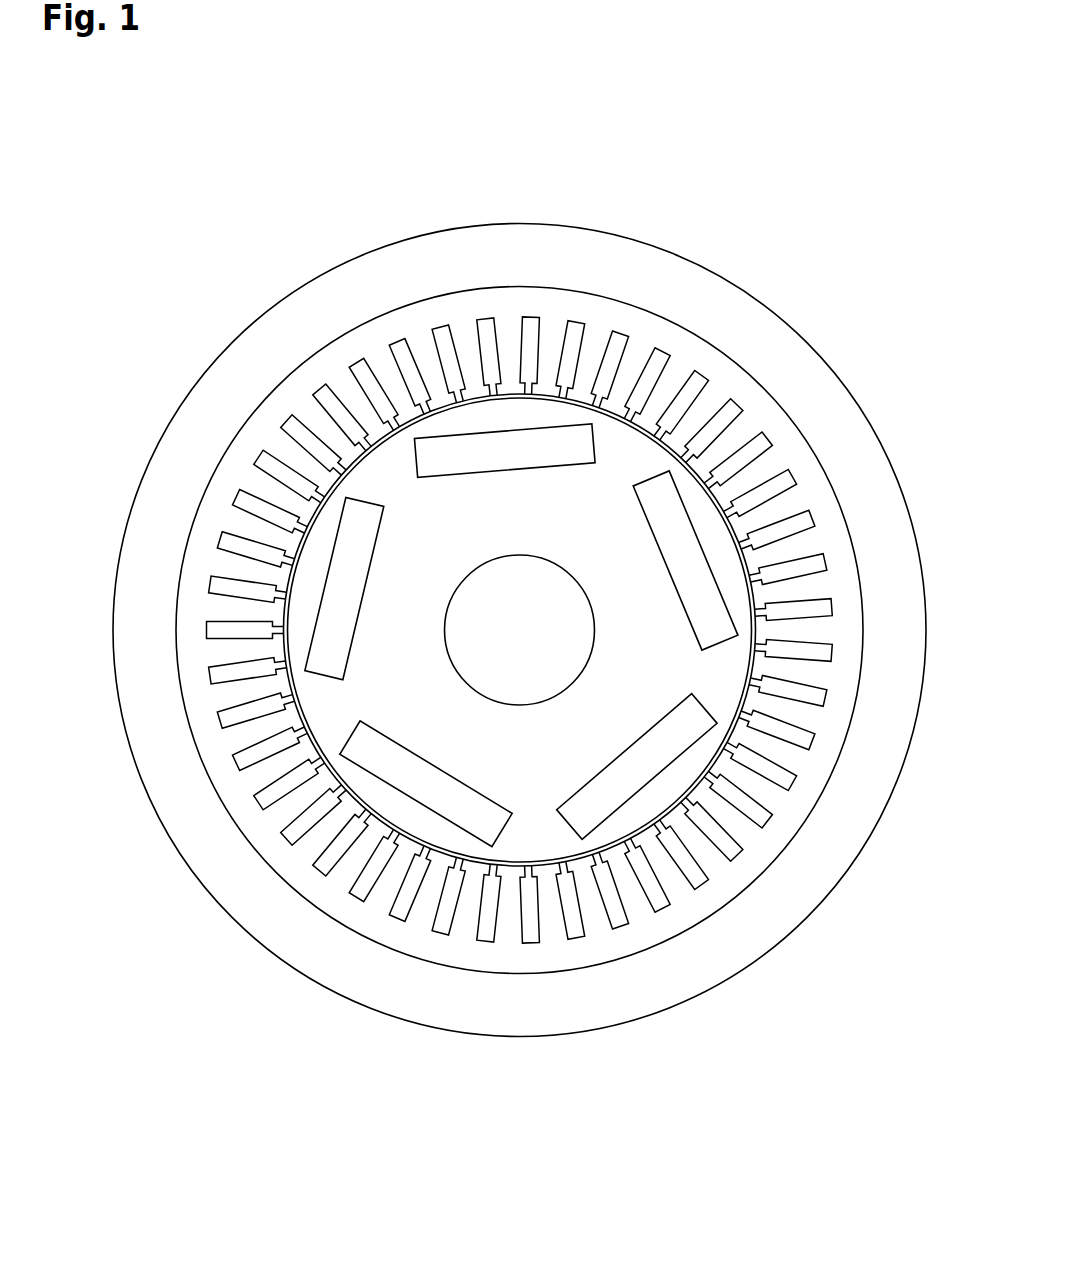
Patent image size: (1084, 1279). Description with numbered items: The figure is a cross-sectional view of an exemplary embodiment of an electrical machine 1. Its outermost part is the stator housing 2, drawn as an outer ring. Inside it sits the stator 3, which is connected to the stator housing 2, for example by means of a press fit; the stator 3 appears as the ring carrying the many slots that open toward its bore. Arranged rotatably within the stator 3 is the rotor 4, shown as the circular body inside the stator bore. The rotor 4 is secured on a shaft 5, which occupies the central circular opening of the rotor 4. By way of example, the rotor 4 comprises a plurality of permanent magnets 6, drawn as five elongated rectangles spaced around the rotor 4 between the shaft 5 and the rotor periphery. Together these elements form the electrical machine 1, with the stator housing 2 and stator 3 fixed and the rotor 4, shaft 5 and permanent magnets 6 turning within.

The electrical machine 1 is at (232, 278).
The stator housing 2 is at (820, 382).
The stator 3 is at (812, 492).
The rotor 4 is at (545, 841).
The shaft 5 is at (542, 595).
The permanent magnets 6 is at (550, 450).